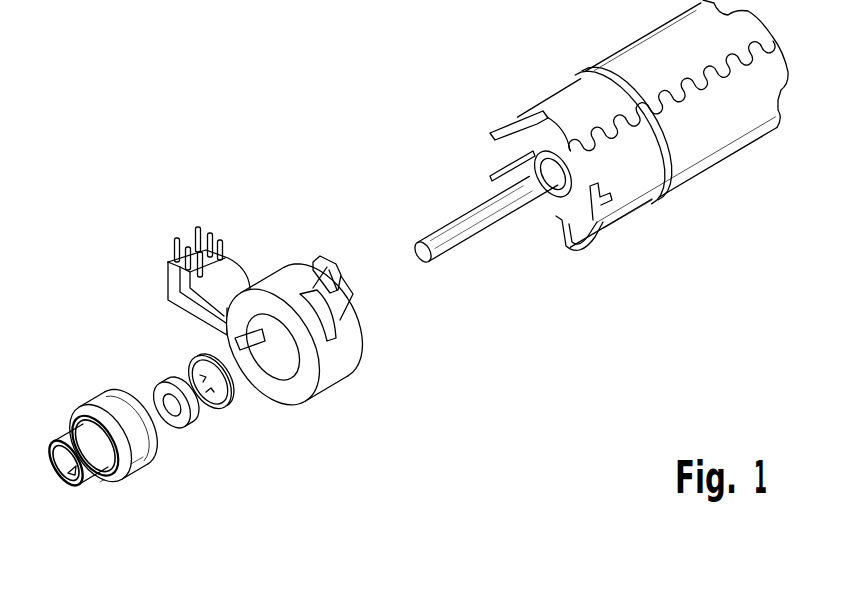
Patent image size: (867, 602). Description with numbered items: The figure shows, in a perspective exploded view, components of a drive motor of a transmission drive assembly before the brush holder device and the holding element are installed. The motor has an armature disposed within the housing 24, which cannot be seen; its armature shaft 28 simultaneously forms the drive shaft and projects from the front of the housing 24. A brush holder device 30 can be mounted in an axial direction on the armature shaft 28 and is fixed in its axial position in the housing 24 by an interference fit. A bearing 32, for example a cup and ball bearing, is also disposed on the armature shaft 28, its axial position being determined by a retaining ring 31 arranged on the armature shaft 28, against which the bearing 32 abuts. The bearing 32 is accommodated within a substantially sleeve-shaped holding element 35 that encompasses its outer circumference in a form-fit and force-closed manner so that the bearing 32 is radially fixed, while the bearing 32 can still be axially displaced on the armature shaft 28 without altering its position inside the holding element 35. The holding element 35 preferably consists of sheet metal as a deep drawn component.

The housing 24 is at (717, 127).
The armature shaft 28 is at (462, 225).
The brush holder device 30 is at (252, 218).
The retaining ring 31 is at (232, 402).
The bearing 32 is at (192, 412).
The holding element 35 is at (112, 410).